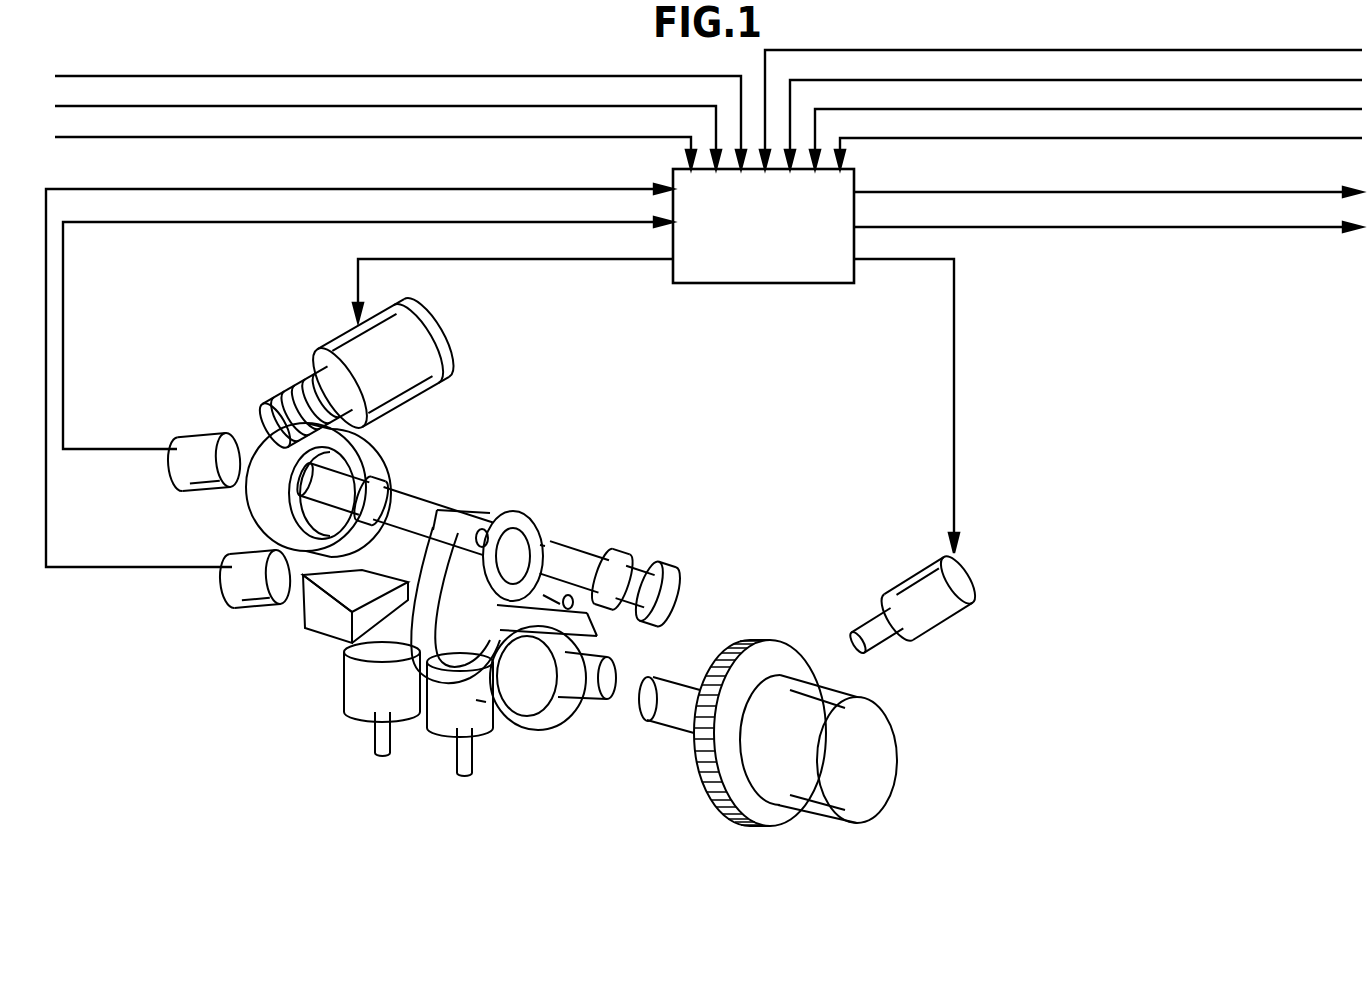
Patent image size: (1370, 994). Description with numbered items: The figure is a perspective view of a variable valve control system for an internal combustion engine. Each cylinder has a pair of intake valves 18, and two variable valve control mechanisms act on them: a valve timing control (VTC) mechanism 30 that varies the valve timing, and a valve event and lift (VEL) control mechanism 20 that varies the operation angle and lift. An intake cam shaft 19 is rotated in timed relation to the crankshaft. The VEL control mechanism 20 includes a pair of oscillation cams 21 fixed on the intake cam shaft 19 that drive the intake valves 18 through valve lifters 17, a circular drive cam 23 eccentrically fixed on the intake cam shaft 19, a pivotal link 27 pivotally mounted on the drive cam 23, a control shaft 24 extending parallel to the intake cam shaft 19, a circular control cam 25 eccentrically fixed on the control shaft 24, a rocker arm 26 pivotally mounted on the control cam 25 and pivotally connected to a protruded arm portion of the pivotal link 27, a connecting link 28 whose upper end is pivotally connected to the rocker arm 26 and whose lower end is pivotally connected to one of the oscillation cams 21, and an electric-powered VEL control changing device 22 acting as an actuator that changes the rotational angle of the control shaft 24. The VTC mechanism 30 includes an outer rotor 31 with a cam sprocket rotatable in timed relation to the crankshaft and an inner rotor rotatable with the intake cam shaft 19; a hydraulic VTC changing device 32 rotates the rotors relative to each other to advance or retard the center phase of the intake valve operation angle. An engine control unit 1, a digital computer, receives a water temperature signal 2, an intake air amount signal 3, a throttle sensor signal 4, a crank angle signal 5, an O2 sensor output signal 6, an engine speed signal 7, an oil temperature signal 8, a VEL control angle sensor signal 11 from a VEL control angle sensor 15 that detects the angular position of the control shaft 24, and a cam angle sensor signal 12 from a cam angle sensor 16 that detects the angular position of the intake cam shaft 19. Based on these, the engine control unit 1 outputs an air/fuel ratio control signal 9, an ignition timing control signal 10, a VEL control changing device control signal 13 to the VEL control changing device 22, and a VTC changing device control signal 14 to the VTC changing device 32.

The engine control unit 1 is at (761, 283).
The water temperature signal 2 is at (400, 108).
The intake air amount signal 3 is at (388, 123).
The throttle sensor signal 4 is at (375, 139).
The crank angle signal 5 is at (1061, 97).
The O2 sensor output signal 6 is at (1073, 111).
The engine speed signal 7 is at (1086, 126).
The oil temperature signal 8 is at (1098, 141).
The air/fuel ratio control signal 9 is at (1108, 180).
The ignition timing control signal 10 is at (1108, 215).
The VEL control angle sensor signal 11 is at (368, 321).
The cam angle sensor signal 12 is at (359, 365).
The VEL control changing device control signal 13 is at (375, 276).
The VTC changing device control signal 14 is at (1103, 394).
The VEL control angle sensor 15 is at (203, 460).
The cam angle sensor 16 is at (235, 575).
The valve lifter 17 is at (448, 708).
The intake valve 18 is at (463, 772).
The intake cam shaft 19 is at (667, 707).
The valve event and lift (VEL) control mechanism 20 is at (530, 490).
The oscillation cam 21 is at (368, 668).
The VEL control changing device 22 is at (413, 358).
The drive cam 23 is at (520, 710).
The control shaft 24 is at (595, 562).
The control cam 25 is at (537, 553).
The rocker arm 26 is at (490, 530).
The pivotal link 27 is at (480, 703).
The connecting link 28 is at (455, 573).
The valve timing control (VTC) mechanism 30 is at (807, 707).
The outer rotor 31 is at (757, 653).
The VTC changing device 32 is at (923, 580).